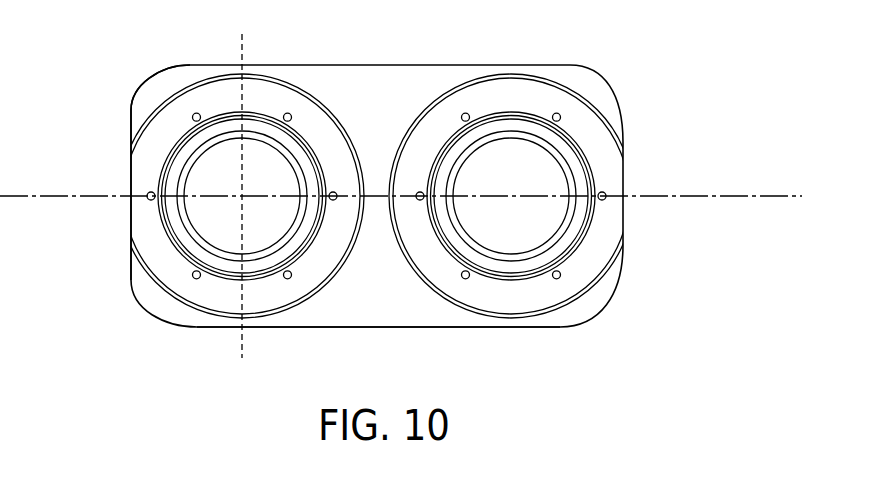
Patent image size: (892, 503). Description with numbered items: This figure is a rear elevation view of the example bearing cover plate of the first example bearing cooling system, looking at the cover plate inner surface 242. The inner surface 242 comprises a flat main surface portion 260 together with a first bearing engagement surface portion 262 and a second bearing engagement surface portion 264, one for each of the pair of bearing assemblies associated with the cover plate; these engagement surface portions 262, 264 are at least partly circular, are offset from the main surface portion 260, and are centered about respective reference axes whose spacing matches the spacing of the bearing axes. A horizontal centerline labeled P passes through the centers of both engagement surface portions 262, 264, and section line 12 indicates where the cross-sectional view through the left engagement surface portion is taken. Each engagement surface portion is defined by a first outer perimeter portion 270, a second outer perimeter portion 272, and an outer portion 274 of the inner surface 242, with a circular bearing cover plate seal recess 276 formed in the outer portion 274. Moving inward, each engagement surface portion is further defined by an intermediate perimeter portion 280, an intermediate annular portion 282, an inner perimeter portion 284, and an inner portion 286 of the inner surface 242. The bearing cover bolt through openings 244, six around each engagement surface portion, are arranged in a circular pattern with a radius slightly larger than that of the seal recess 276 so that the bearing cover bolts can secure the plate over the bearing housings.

The section line 12- 12 is at (242, 34).
The inner surface 242 is at (420, 70).
The bearing cover bolt through openings 244 is at (283, 114).
The main surface portion 260 is at (422, 316).
The first bearing engagement surface portion 262 is at (157, 286).
The second bearing engagement surface portion 264 is at (582, 296).
The first outer perimeter portion 270 is at (140, 127).
The second outer perimeter portion 272 is at (190, 100).
The outer portion 274 is at (130, 171).
The bearing cover plate seal recess 276 is at (160, 223).
The intermediate perimeter portion 280 is at (223, 279).
The intermediate annular portion 282 is at (313, 240).
The inner perimeter portion 284 is at (298, 160).
The inner portion 286 is at (272, 158).
The plane P is at (703, 184).